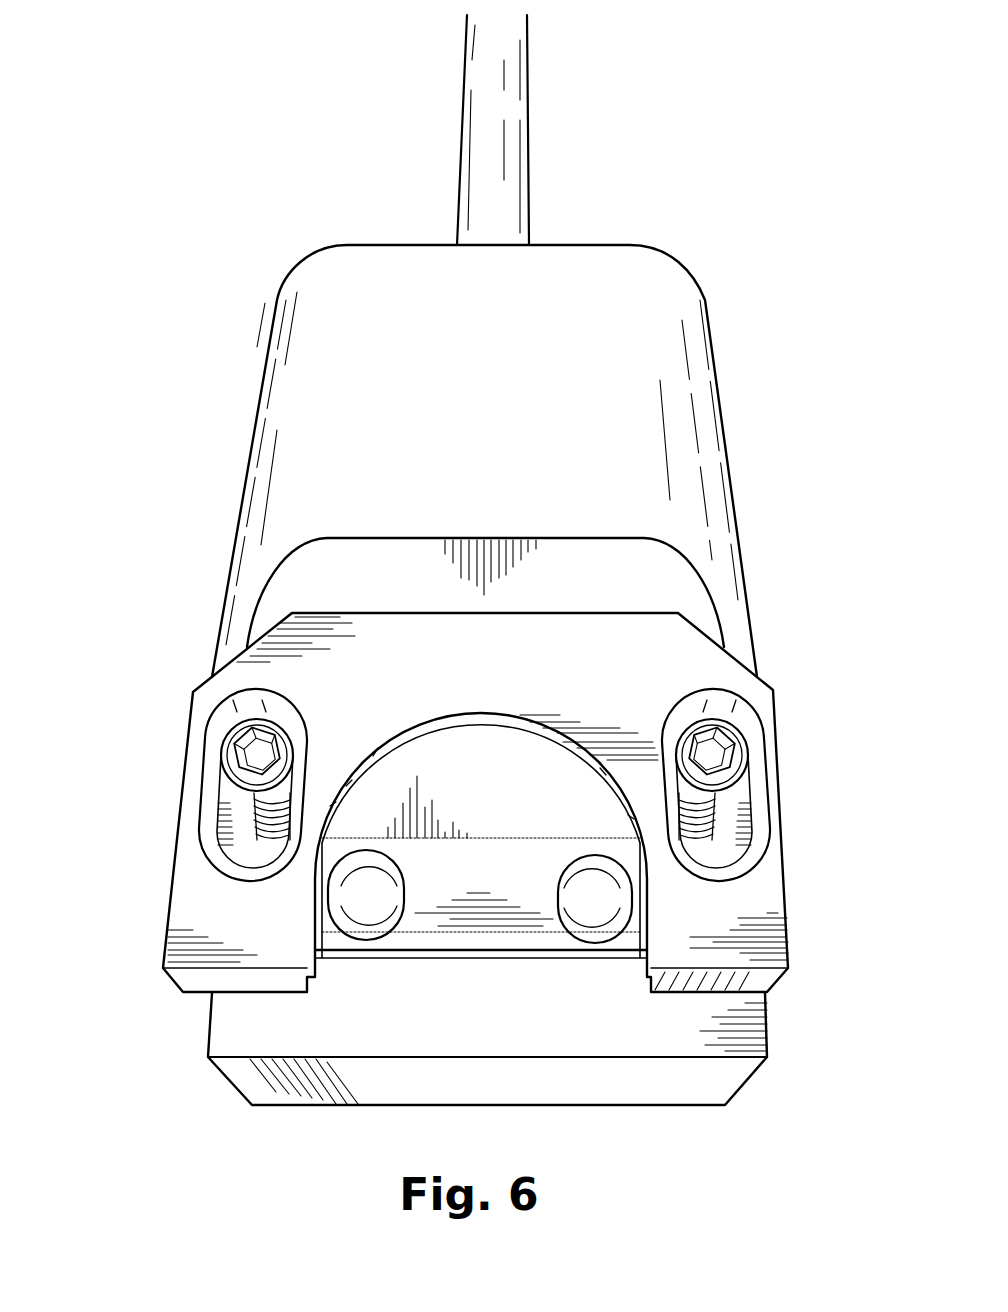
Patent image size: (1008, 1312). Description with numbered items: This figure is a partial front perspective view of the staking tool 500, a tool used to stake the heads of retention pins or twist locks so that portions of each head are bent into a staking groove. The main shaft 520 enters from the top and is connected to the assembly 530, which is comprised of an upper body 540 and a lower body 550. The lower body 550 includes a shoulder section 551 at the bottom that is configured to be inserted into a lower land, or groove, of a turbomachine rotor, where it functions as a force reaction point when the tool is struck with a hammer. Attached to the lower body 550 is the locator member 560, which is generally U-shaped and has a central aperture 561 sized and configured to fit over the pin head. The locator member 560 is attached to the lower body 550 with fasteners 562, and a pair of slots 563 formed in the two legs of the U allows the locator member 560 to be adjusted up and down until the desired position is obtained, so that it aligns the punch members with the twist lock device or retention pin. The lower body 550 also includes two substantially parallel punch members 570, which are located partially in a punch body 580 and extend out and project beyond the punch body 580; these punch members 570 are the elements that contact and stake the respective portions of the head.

The staking tool 500 is at (175, 124).
The main shaft 520 is at (508, 50).
The assembly 530 is at (145, 472).
The upper body 540 is at (693, 343).
The lower body 550 is at (722, 575).
The shoulder section 551 is at (690, 1080).
The locator member 560 is at (765, 935).
The central aperture 561 is at (577, 750).
The fasteners 562 is at (220, 745).
The slots 563 is at (203, 854).
The punch members 570 is at (588, 913).
The punch body 580 is at (500, 802).